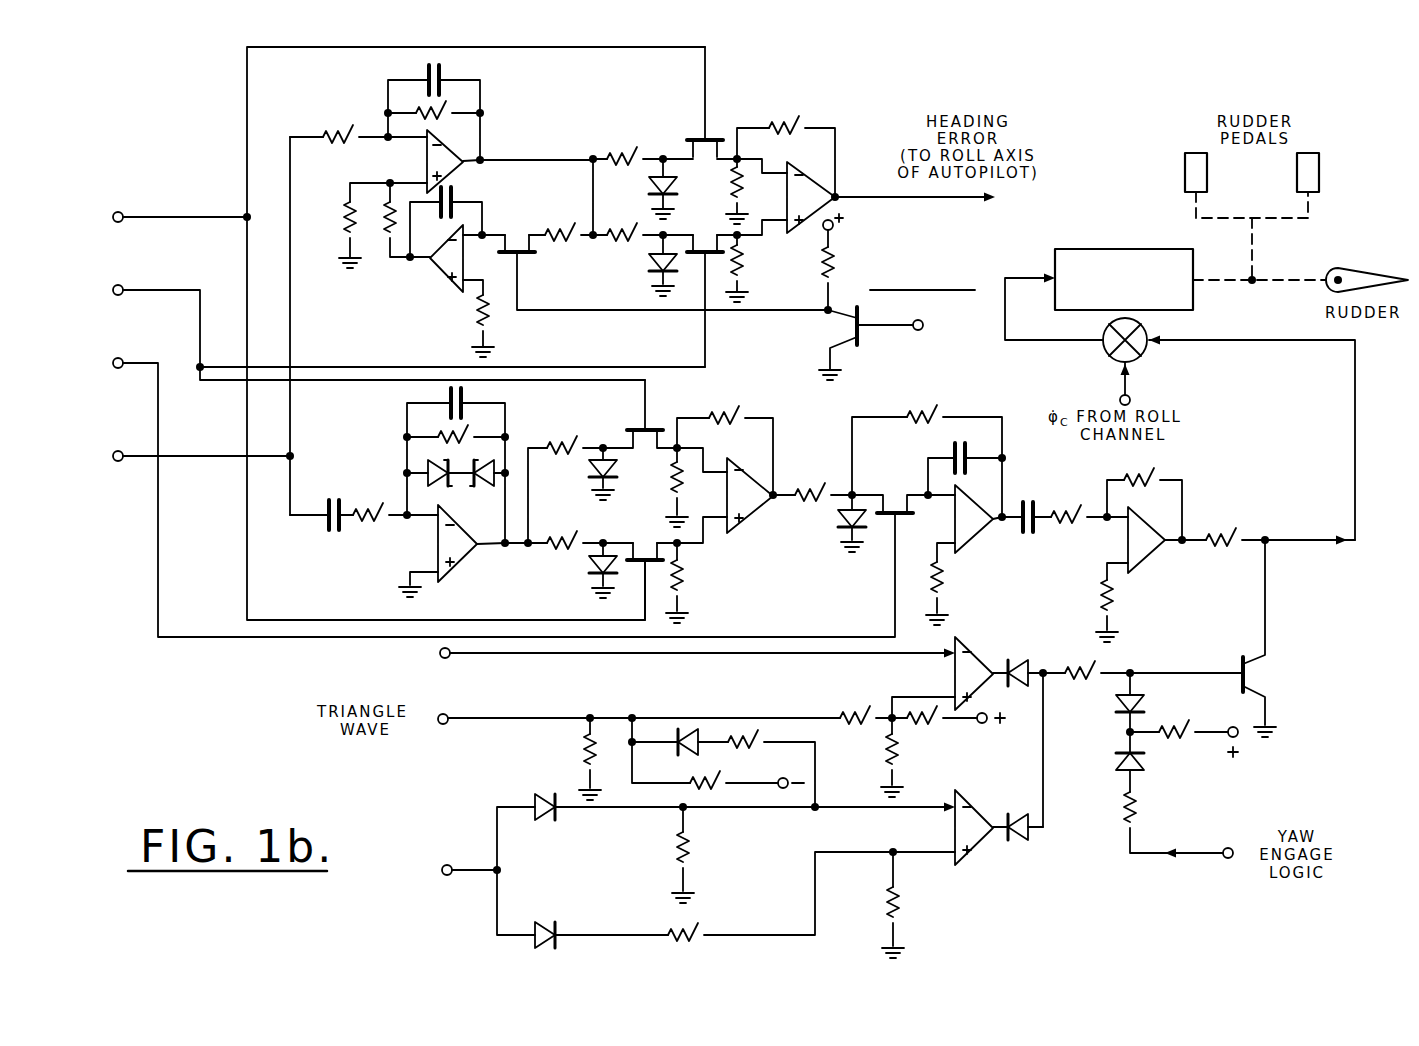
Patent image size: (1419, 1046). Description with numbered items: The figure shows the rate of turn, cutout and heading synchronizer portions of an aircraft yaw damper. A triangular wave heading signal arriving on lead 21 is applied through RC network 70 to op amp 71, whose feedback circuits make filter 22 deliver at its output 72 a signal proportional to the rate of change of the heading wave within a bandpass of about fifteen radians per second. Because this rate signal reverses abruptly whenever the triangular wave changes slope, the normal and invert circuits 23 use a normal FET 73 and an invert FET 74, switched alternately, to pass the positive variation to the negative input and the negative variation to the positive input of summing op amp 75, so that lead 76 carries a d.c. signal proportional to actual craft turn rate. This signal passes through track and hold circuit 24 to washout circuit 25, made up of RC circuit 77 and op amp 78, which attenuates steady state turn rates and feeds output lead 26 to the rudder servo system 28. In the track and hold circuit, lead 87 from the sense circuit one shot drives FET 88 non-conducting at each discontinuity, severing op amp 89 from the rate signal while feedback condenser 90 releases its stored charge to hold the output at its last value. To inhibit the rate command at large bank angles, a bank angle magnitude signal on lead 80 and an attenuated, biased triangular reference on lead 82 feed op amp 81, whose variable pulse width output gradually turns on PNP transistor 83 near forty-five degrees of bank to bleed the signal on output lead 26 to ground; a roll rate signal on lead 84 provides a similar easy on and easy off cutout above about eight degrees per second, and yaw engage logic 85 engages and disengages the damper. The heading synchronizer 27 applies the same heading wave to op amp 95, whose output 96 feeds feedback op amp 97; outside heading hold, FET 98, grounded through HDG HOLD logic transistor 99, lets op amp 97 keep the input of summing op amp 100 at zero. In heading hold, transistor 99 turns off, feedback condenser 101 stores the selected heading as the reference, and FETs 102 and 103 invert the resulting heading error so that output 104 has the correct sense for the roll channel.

The lead 21 is at (128, 462).
The filter 22 is at (467, 612).
The normal and invert circuits 23 is at (660, 499).
The track and hold circuit 24 is at (997, 598).
The washout circuit 25 is at (1172, 625).
The output lead 26 is at (1302, 540).
The heading synchronizer 27 is at (447, 344).
The rudder servo system 28 is at (1122, 249).
The RC network 70 is at (388, 558).
The op amp 71 is at (478, 549).
The output 72 is at (528, 548).
The normal FET 73 is at (632, 428).
The invert FET 74 is at (644, 553).
The summing op amp 75 is at (752, 516).
The lead 76 is at (785, 492).
The RC circuit 77 is at (1082, 495).
The op amp 78 is at (1150, 553).
The lead 80 is at (710, 655).
The op amp 81 is at (978, 660).
The lead 82 is at (902, 702).
The PNP transistor 83 is at (1266, 672).
The lead 84 is at (474, 868).
The yaw engage logic 85 is at (1208, 804).
The lead 87 is at (200, 640).
The FET 88 is at (894, 497).
The op amp 89 is at (982, 528).
The feedback condenser 90 is at (952, 456).
The op amp 95 is at (425, 160).
The output 96 is at (538, 158).
The op amp 97 is at (436, 280).
The FET 98 is at (526, 260).
The HDG HOLD logic transistor 99 is at (836, 328).
The summing op amp 100 is at (806, 228).
The feedback condenser 101 is at (462, 200).
The FET 102 is at (704, 244).
The FET 103 is at (692, 135).
The output 104 is at (912, 200).